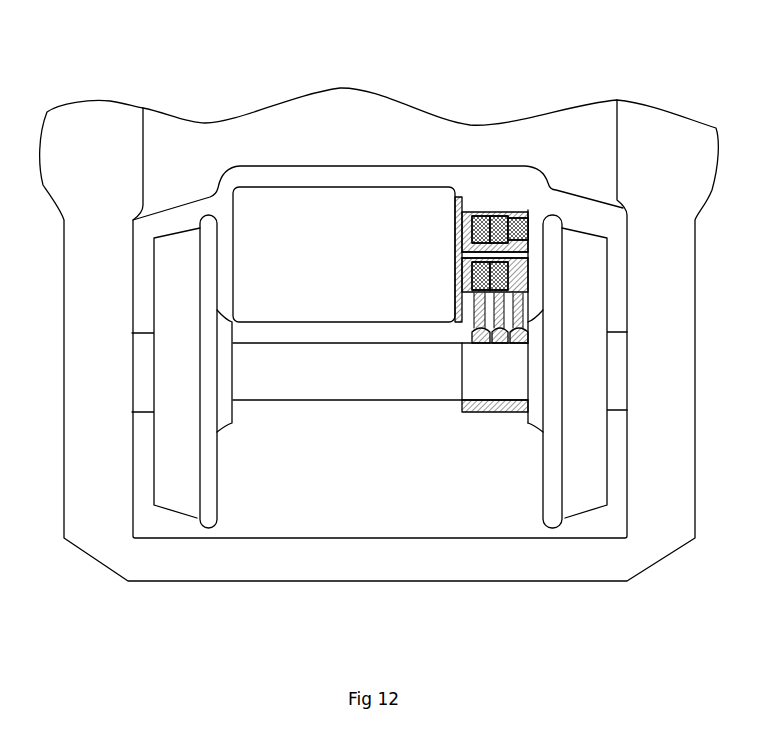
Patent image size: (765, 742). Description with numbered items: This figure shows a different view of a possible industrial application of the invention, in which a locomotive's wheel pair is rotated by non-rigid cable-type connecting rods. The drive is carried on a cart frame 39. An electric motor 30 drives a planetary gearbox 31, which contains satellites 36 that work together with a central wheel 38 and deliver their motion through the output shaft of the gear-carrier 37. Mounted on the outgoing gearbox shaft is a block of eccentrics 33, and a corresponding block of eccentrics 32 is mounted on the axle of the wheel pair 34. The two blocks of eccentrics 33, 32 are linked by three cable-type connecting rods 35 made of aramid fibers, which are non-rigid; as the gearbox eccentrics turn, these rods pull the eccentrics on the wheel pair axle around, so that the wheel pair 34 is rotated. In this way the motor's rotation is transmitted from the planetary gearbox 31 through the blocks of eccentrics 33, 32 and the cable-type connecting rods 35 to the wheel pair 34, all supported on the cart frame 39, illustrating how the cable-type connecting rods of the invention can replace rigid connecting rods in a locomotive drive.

The electric motor 30 is at (274, 238).
The planetary gearbox 31 is at (470, 212).
The block of eccentrics on the wheel pair axle 32 is at (518, 343).
The block of eccentrics on the outgoing gearbox shaft 33 is at (518, 215).
The wheel pair 34 is at (277, 382).
The cable-type connecting rods 35 is at (528, 418).
The satellites 36 is at (455, 277).
The output shaft of the gear-carrier 37 is at (513, 250).
The central wheel 38 is at (468, 402).
The cart frame 39 is at (268, 556).